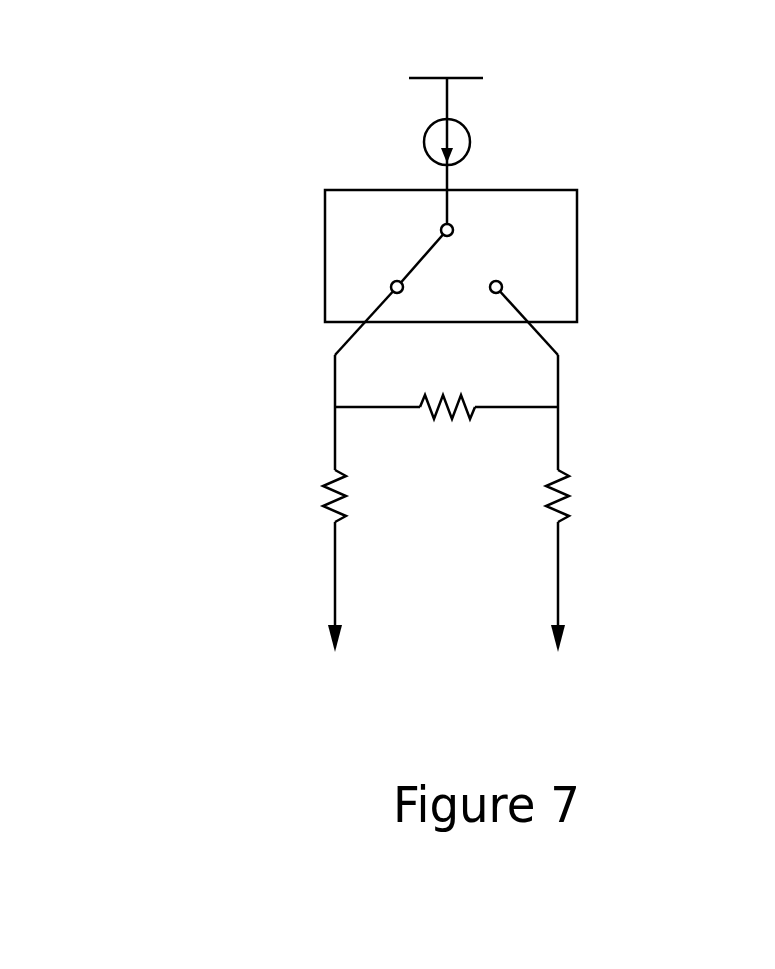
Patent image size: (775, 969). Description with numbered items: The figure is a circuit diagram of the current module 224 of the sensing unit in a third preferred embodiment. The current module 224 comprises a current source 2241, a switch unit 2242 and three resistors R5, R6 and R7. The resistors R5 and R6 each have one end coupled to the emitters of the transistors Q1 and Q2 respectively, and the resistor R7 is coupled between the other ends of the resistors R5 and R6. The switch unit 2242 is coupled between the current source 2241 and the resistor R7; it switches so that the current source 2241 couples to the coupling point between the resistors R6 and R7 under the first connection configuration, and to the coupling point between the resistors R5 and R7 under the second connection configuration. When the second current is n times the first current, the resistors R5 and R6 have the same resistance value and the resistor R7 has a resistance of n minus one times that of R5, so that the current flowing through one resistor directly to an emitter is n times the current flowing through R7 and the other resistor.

The current module 224 is at (212, 615).
The current source 2241 is at (470, 138).
The switch unit 2242 is at (577, 268).
The resistor R5 is at (356, 496).
The resistor R6 is at (580, 496).
The resistor R7 is at (446, 387).